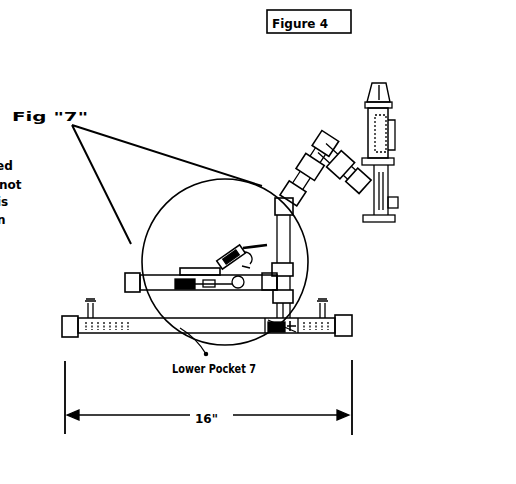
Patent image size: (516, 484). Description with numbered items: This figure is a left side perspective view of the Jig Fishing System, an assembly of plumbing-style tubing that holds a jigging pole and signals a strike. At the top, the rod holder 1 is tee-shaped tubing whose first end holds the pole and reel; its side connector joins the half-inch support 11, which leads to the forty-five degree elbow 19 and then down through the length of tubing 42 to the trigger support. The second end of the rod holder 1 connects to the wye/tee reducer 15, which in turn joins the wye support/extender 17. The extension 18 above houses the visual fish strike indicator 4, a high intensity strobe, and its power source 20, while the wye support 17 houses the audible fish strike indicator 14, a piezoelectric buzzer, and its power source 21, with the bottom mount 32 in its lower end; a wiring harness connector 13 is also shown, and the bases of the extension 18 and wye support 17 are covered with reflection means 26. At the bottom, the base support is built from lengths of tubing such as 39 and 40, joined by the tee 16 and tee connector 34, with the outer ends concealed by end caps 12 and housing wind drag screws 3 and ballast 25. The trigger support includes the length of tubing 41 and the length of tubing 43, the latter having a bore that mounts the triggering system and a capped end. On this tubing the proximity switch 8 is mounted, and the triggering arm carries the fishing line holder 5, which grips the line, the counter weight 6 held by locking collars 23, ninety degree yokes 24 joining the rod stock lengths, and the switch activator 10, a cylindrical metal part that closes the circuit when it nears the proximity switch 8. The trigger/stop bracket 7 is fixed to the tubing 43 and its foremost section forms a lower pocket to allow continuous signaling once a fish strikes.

The rod holder 1 is at (296, 165).
The wind drag screws 3 is at (91, 300).
The visual fish strike indicator 4 is at (384, 84).
The fishing line holder 5 is at (247, 264).
The counter weight 6 is at (234, 252).
The trigger/stop bracket 7 is at (160, 282).
The proximity switch 8 is at (246, 288).
The switch activator 10 is at (162, 290).
The ½" support 11 is at (292, 183).
The end cap 12 is at (66, 316).
The wiring harness connector 13 is at (392, 148).
The audible fish strike indicator 14 is at (400, 202).
The wye/tee reducer 15 is at (340, 190).
The tee 16 is at (293, 270).
The wye support/extender 17 is at (394, 162).
The extension 18 is at (366, 128).
The 45° elbow 19 is at (276, 198).
The visual fish strike indicator power source 20 is at (398, 138).
The audible fish strike indicator power source 21 is at (392, 223).
The locking collar 23 is at (204, 276).
The 90° yoke 24 is at (222, 290).
The ballast 25 is at (102, 338).
The reflection means 26 is at (360, 167).
The audible fish strike indicator power source bottom mount 32 is at (376, 222).
The tee connector 34 is at (282, 338).
The length of tubing 39 is at (326, 338).
The length of tubing 40 is at (136, 338).
The length of tubing 41 is at (294, 304).
The length of tubing 42 is at (300, 238).
The length of tubing 43 is at (135, 273).